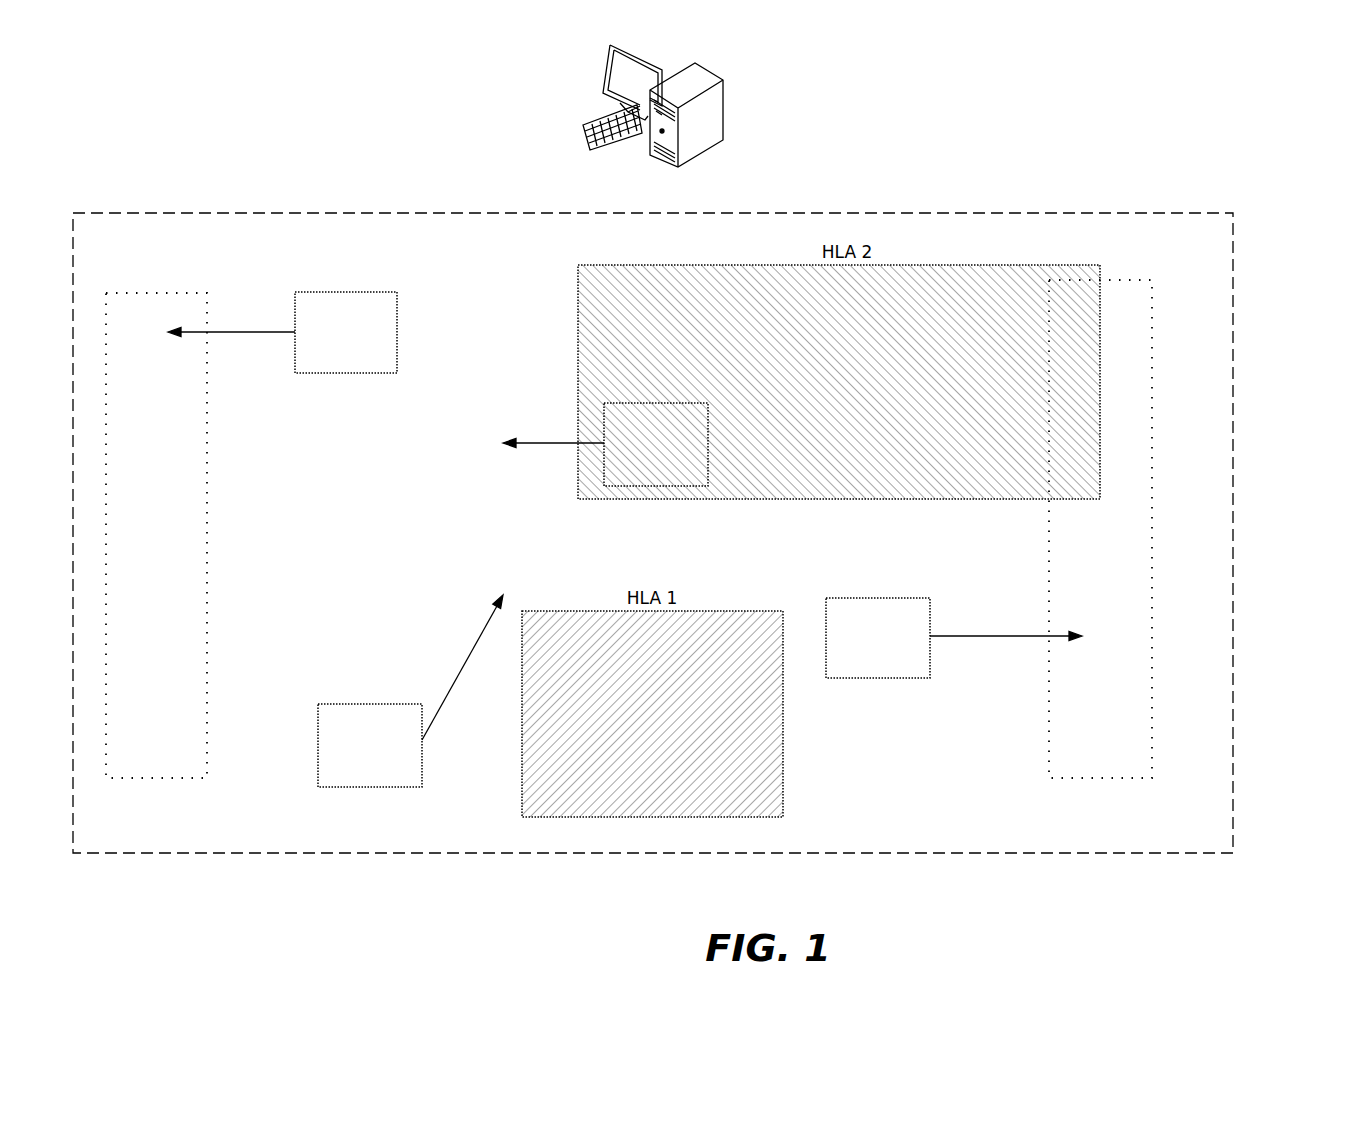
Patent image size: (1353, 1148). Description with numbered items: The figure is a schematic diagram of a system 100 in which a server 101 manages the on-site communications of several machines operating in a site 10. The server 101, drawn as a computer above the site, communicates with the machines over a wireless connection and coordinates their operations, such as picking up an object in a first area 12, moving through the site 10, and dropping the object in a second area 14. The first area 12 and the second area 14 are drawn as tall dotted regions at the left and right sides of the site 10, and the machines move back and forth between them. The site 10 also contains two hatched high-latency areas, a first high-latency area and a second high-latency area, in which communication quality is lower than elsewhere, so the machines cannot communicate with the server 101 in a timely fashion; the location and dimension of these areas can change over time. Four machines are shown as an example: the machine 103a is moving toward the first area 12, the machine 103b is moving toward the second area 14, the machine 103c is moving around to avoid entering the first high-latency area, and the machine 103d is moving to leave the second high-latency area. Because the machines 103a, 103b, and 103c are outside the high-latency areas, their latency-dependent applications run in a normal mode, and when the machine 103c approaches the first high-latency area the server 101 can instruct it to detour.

The system 100 is at (1332, 96).
The server 101 is at (674, 104).
The site 10 is at (653, 518).
The first area 12 is at (156, 535).
The second area 14 is at (1100, 529).
The machine 103a is at (282, 332).
The machine 103b is at (954, 638).
The machine 103c is at (410, 691).
The machine 103d is at (605, 444).